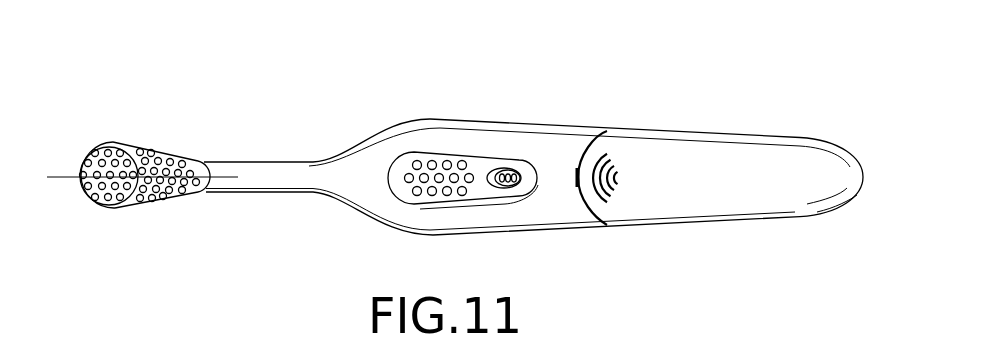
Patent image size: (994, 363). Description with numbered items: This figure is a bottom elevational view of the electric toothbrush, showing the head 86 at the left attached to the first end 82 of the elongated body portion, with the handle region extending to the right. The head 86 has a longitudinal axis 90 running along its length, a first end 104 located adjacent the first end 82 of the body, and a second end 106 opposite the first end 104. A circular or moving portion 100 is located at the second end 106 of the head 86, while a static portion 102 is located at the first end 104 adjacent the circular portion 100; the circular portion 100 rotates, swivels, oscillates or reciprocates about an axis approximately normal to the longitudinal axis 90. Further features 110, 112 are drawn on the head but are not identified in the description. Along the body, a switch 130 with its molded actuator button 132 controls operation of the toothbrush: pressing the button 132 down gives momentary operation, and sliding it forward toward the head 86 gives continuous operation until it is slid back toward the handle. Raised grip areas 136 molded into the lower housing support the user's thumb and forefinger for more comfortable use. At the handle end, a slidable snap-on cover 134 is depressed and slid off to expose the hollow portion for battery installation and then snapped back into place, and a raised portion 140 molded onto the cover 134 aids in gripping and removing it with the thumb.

The first end 82 is at (213, 183).
The head 86 is at (136, 150).
The longitudinal axis 90 is at (58, 177).
The circular portion 100 is at (102, 146).
The static portion 102 is at (173, 158).
The first end 104 is at (192, 196).
The second end 106 is at (120, 203).
The head rim 110 is at (90, 203).
The head tip 112 is at (198, 160).
The switch 130 is at (498, 168).
The molded actuator button 132 is at (518, 170).
The slidable snap-on cover 134 is at (760, 165).
The raised grip areas 136 is at (430, 160).
The raised portion 140 is at (613, 162).